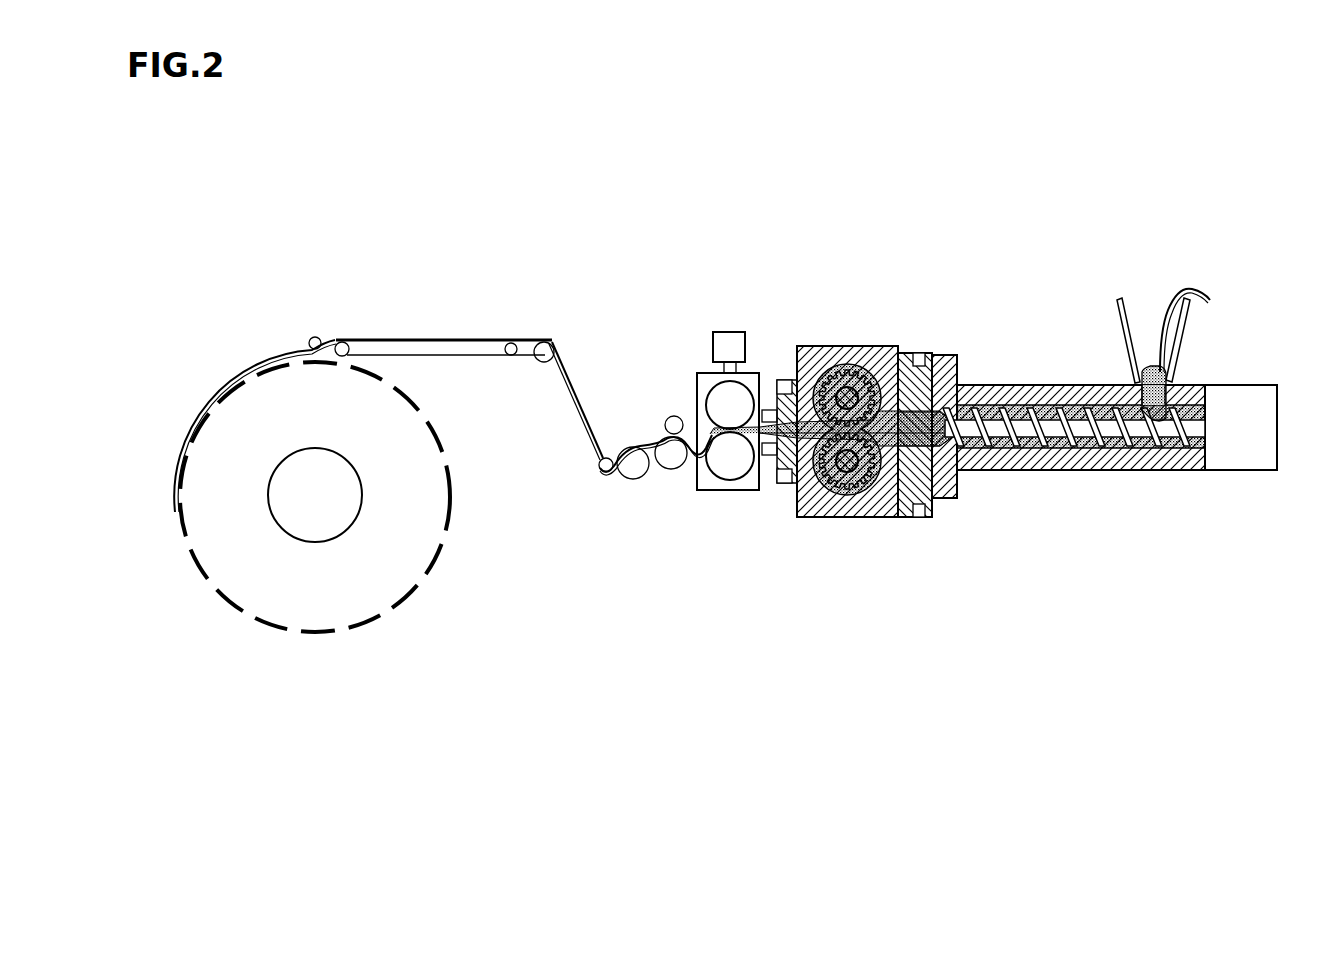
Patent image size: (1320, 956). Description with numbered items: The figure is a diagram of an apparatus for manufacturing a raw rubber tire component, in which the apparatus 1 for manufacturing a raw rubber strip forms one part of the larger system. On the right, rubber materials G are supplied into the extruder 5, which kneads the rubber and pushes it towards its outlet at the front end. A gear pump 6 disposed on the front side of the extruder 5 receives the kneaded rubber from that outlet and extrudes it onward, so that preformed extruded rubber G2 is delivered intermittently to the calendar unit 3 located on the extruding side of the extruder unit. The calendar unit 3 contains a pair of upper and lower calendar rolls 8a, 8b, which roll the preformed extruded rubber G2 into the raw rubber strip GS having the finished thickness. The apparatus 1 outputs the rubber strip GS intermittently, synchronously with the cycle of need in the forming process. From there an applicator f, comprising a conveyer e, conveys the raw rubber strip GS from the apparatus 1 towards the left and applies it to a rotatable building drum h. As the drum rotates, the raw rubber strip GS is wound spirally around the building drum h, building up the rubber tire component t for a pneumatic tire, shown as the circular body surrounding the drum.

The apparatus for manufacturing a raw rubber strip 1 is at (1087, 416).
The calendar unit 3 is at (727, 444).
The extruder 5 is at (1012, 507).
The gear pump 6 is at (823, 335).
The upper calendar roll 8a is at (722, 400).
The lower calendar roll 8b is at (722, 462).
The conveyer e is at (487, 350).
The applicator f is at (553, 452).
The building drum h is at (335, 505).
The rubber tire component t is at (410, 565).
The rubber materials G is at (1188, 284).
The raw rubber strip GS is at (695, 433).
The preformed extruded rubber G2 is at (763, 428).